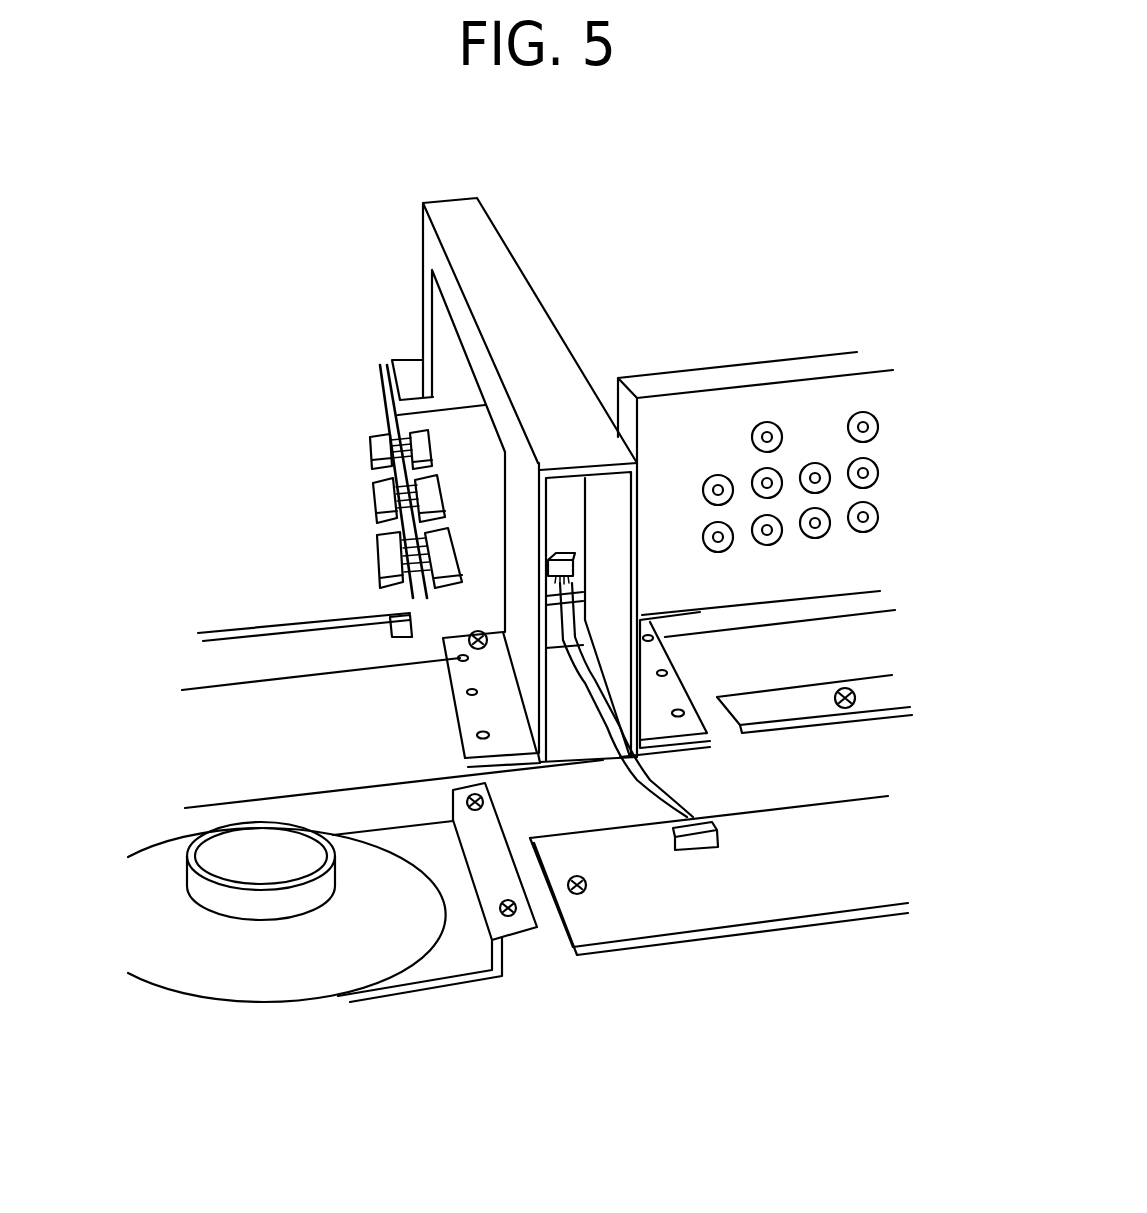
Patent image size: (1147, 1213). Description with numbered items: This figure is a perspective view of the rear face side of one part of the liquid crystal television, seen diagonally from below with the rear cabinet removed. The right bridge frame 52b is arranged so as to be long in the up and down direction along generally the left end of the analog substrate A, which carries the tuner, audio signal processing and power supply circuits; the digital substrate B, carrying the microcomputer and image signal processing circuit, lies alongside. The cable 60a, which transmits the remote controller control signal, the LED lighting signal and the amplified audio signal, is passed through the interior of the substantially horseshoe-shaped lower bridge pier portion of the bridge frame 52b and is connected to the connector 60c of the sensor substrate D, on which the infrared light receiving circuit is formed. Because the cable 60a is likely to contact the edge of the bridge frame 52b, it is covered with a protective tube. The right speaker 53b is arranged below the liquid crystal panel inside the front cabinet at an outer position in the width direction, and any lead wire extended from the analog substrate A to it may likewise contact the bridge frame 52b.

The right bridge frame 52b is at (527, 273).
The right speaker 53b is at (352, 960).
The cable 60a is at (632, 775).
The connector 60c is at (698, 847).
The analog substrate A is at (465, 613).
The digital substrate B is at (252, 637).
The sensor substrate D is at (788, 930).